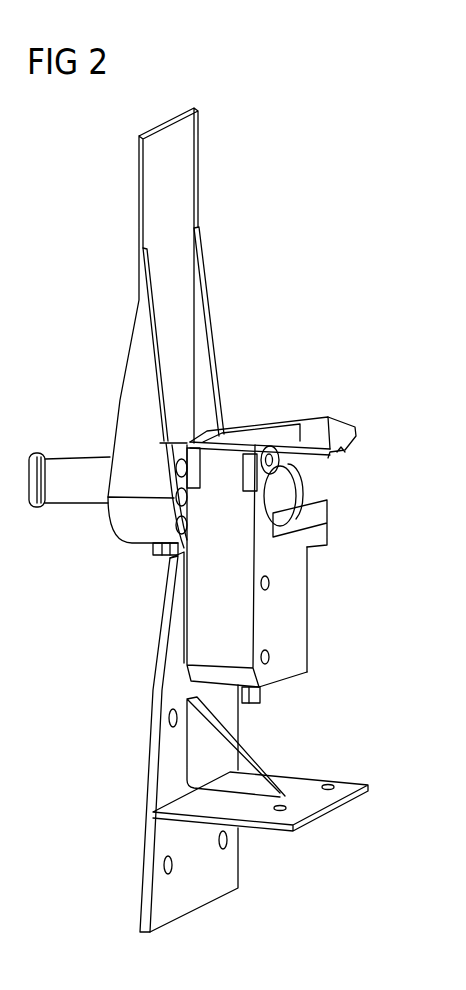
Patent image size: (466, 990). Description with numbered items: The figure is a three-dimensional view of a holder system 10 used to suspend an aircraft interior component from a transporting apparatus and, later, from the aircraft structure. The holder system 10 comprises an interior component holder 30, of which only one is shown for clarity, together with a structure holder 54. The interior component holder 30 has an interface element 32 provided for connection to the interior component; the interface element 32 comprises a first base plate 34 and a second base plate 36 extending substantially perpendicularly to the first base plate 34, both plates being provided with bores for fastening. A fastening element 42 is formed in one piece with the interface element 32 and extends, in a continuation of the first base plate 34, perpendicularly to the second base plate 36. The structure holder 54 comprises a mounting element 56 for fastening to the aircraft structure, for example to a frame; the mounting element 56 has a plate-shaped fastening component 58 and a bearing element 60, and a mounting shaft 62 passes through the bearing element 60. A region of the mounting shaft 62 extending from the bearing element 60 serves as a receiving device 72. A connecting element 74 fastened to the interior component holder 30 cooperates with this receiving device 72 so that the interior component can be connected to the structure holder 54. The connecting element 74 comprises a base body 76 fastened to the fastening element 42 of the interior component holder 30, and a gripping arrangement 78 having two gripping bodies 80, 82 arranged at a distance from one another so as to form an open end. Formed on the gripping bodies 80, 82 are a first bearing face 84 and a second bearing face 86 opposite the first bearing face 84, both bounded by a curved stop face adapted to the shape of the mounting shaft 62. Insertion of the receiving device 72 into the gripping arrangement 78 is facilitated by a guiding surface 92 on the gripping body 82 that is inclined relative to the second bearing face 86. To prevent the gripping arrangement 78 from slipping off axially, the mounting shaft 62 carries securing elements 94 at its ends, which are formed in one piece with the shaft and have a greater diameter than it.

The holder system 10 is at (345, 135).
The interior component holder 30 is at (86, 833).
The interface element 32 is at (294, 873).
The first base plate 34 is at (188, 900).
The second base plate 36 is at (307, 787).
The fastening element 42 is at (160, 676).
The structure holder 54 is at (287, 249).
The mounting element 56 is at (204, 353).
The plate-shaped fastening component 58 is at (155, 197).
The bearing element 60 is at (142, 532).
The mounting shaft 62 is at (87, 470).
The second receiving device 72 is at (78, 503).
The connecting element 74 is at (319, 605).
The base body 76 is at (297, 636).
The gripping arrangement 78 is at (326, 403).
The first gripping body 80 is at (320, 444).
The second gripping body 82 is at (313, 543).
The first bearing face 84 is at (315, 472).
The second bearing face 86 is at (310, 491).
The guiding surface 92 is at (318, 496).
The securing element 94 is at (37, 451).